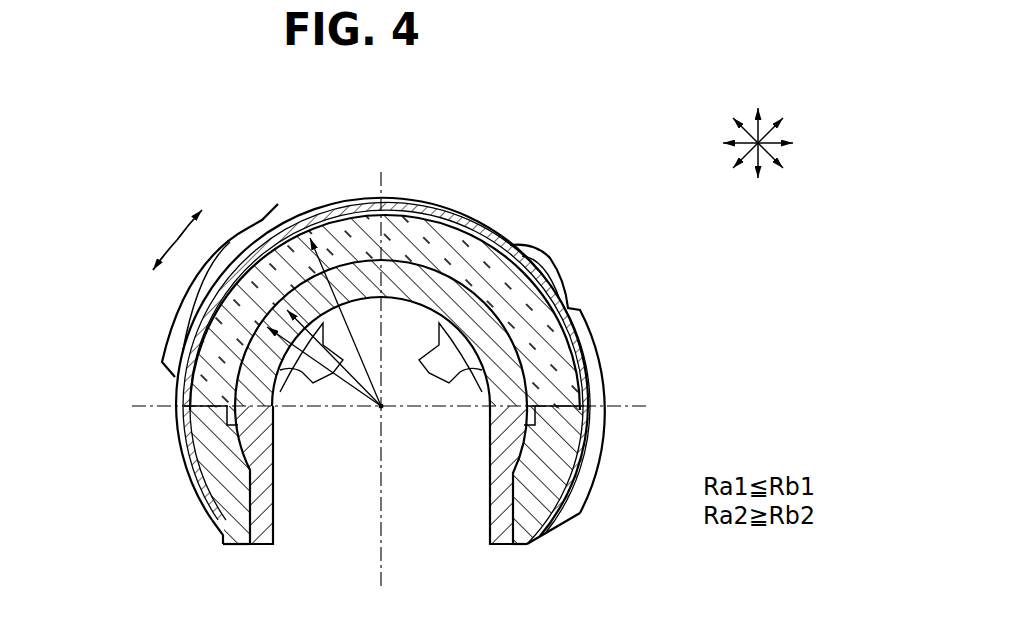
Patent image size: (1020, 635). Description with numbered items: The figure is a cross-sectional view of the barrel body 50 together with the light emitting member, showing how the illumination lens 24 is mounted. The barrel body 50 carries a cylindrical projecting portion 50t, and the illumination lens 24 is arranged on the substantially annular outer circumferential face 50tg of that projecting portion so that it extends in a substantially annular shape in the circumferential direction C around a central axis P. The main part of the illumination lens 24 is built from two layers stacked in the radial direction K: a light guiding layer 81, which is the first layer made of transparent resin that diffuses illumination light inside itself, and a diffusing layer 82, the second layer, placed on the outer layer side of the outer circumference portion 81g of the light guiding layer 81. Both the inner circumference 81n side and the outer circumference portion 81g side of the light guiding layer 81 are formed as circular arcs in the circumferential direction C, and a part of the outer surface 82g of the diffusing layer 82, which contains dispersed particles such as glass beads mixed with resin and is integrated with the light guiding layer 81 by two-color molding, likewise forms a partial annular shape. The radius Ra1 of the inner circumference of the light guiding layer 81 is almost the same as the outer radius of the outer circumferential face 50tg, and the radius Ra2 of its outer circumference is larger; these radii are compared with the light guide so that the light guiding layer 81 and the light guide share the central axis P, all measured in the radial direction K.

The illumination lens 24 is at (379, 326).
The light guiding layer 81 is at (350, 341).
The outer circumference portion 81g is at (452, 225).
The inner circumference 81n is at (245, 362).
The diffusing layer 82 is at (399, 326).
The outer surface 82g is at (330, 203).
The barrel body 50 is at (463, 435).
The cylindrical projecting portion 50t is at (497, 358).
The outer circumferential face 50tg is at (397, 272).
The radius of inner circumference of light guiding layer Ra1 is at (300, 378).
The radius of outer circumference of light guiding layer Ra2 is at (381, 406).
The central axis P is at (381, 406).
The circumferential direction C is at (176, 240).
The radial direction K is at (758, 125).